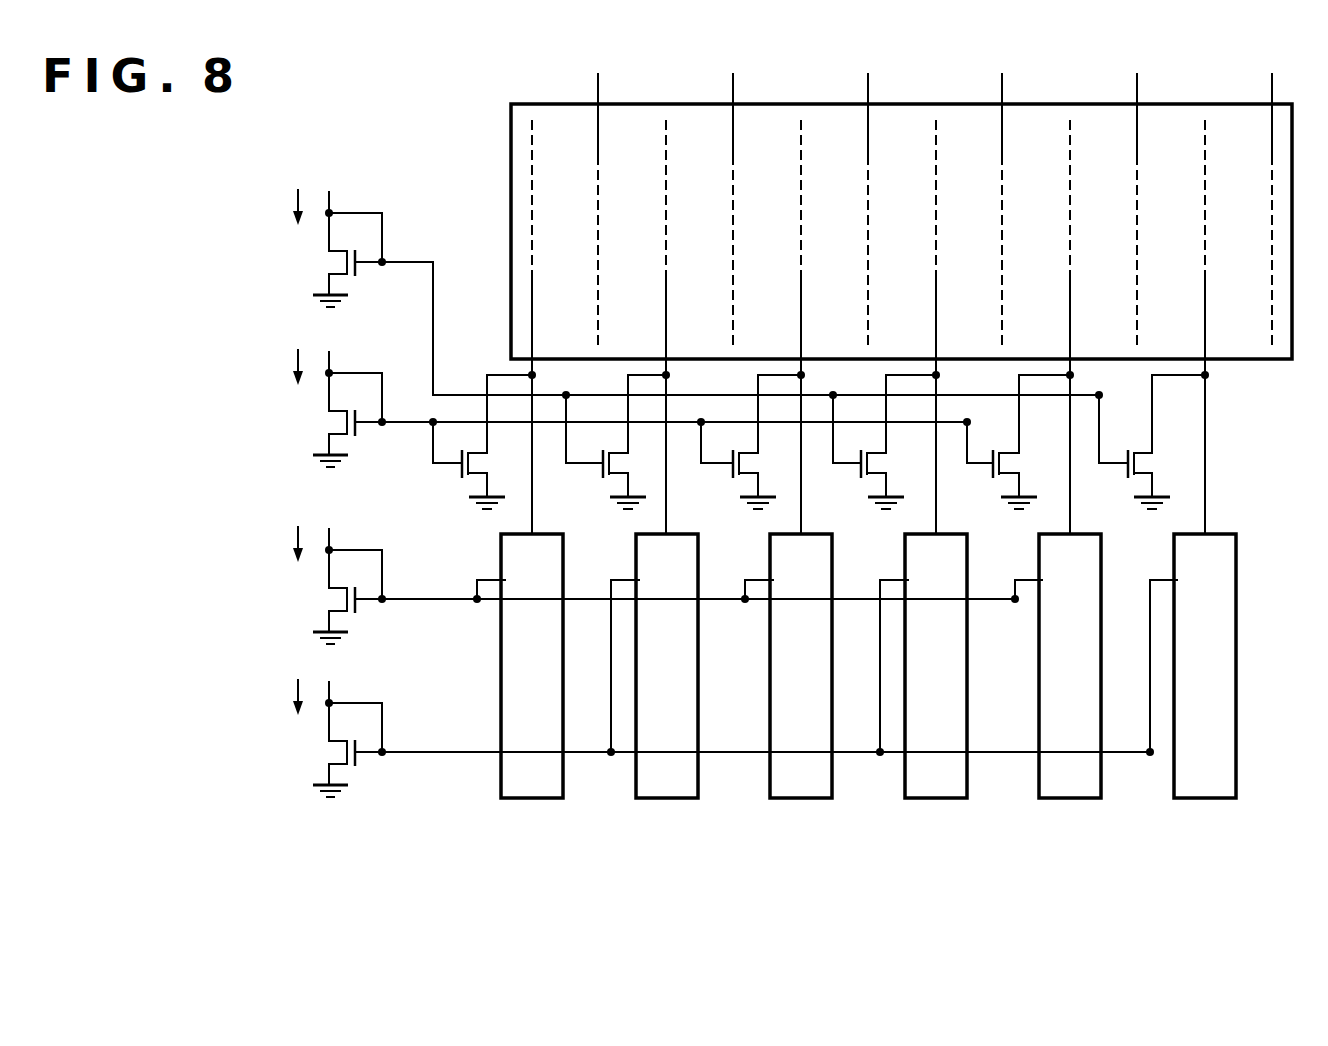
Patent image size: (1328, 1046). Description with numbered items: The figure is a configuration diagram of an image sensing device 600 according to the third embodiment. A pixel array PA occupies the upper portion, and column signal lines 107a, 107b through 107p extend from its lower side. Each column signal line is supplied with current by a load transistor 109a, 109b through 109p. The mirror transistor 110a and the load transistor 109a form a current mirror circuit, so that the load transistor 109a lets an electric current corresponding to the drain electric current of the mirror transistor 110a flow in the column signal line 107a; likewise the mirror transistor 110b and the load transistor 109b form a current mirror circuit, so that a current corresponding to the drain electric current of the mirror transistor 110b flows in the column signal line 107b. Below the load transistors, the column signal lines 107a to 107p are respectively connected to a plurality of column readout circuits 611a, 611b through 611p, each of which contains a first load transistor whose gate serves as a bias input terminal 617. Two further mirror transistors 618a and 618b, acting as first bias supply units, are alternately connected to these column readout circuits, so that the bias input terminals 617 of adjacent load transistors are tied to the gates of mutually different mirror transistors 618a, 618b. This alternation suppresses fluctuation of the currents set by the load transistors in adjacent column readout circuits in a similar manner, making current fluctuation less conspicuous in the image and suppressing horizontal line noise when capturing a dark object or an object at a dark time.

The pixel array PA is at (1213, 94).
The column signal line 107a is at (568, 304).
The column signal line 107b is at (703, 304).
The column signal line 107p is at (1244, 306).
The load transistor 109a is at (451, 474).
The load transistor 109b is at (591, 474).
The load transistor 109p is at (1118, 474).
The mirror transistor 110a is at (384, 438).
The mirror transistor 110b is at (384, 278).
The image sensing device 600 is at (363, 852).
The column readout circuit 611a is at (533, 799).
The column readout circuit 611b is at (668, 799).
The column readout circuit 611p is at (1206, 799).
The bias input terminal 617 is at (531, 565).
The mirror transistor 618a is at (384, 615).
The mirror transistor 618b is at (384, 768).